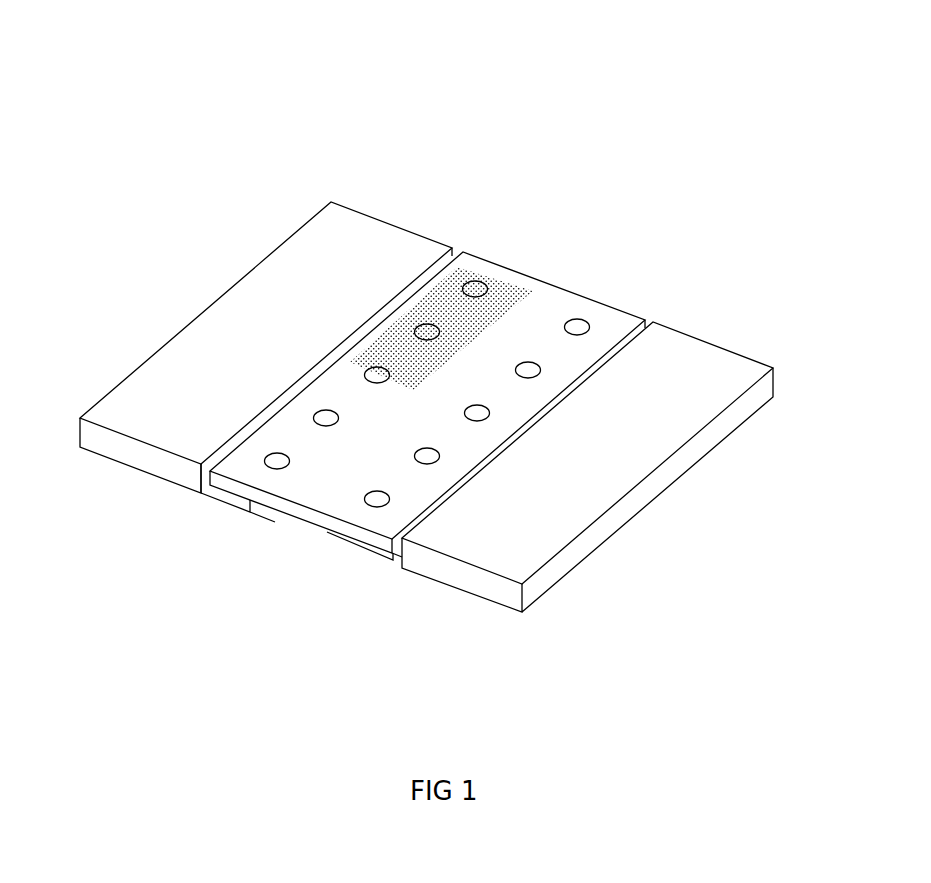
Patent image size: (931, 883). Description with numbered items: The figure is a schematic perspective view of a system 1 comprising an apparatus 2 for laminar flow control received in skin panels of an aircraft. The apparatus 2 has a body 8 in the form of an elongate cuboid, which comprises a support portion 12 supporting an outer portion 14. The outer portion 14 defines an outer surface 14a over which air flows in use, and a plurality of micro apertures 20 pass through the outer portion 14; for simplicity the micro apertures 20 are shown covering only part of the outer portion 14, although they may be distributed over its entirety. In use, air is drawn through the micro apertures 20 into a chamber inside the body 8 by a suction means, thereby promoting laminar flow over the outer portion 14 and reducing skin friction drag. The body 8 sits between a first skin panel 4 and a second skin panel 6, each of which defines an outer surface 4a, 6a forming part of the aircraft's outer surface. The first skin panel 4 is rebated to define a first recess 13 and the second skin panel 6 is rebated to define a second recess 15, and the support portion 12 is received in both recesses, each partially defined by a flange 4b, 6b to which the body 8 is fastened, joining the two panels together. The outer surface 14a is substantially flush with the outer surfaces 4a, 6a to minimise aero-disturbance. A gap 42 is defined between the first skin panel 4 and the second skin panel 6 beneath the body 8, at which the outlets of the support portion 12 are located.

The system 1 is at (249, 67).
The apparatus for laminar flow control 2 is at (586, 212).
The first skin panel 4 is at (383, 222).
The outer surface of first skin panel 4a is at (408, 248).
The flange of first skin panel 4b is at (233, 498).
The second skin panel 6 is at (738, 352).
The outer surface of second skin panel 6a is at (688, 347).
The flange of second skin panel 6b is at (360, 548).
The body 8 is at (565, 290).
The support portion 12 is at (270, 502).
The first recess 13 is at (202, 487).
The outer portion 14 is at (583, 303).
The outer surface of outer portion 14a is at (577, 327).
The second recess 15 is at (393, 562).
The micro apertures 20 is at (468, 270).
The gap 42 is at (327, 535).